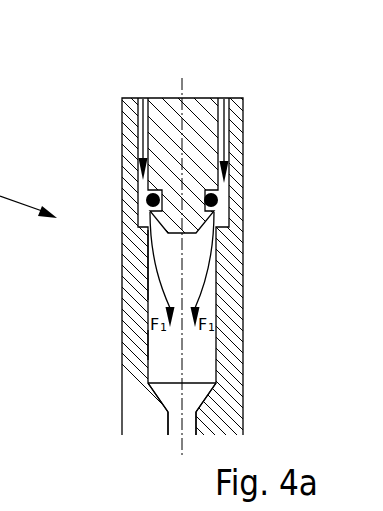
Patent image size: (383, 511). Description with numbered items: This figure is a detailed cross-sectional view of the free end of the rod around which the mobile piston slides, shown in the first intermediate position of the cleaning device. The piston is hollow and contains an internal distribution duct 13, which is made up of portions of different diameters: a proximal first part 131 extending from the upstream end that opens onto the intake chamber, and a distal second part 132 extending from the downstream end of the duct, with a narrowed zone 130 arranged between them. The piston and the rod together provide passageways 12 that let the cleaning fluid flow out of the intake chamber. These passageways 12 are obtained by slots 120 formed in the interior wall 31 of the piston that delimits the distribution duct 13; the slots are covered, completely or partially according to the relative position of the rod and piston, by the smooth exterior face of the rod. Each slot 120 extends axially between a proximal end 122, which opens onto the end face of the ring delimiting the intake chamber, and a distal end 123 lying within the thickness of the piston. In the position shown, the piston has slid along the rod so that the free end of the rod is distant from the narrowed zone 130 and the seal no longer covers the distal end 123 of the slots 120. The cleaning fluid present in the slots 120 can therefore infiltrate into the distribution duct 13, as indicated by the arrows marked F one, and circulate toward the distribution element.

The passageways 12 is at (238, 118).
The internal distribution duct 13 is at (197, 378).
The interior wall 31 is at (158, 343).
The slots 120 is at (229, 207).
The proximal end 122 is at (145, 98).
The distal end 123 is at (229, 255).
The narrowed zone 130 is at (165, 398).
The proximal first part 131 is at (157, 287).
The distal second part 132 is at (185, 425).